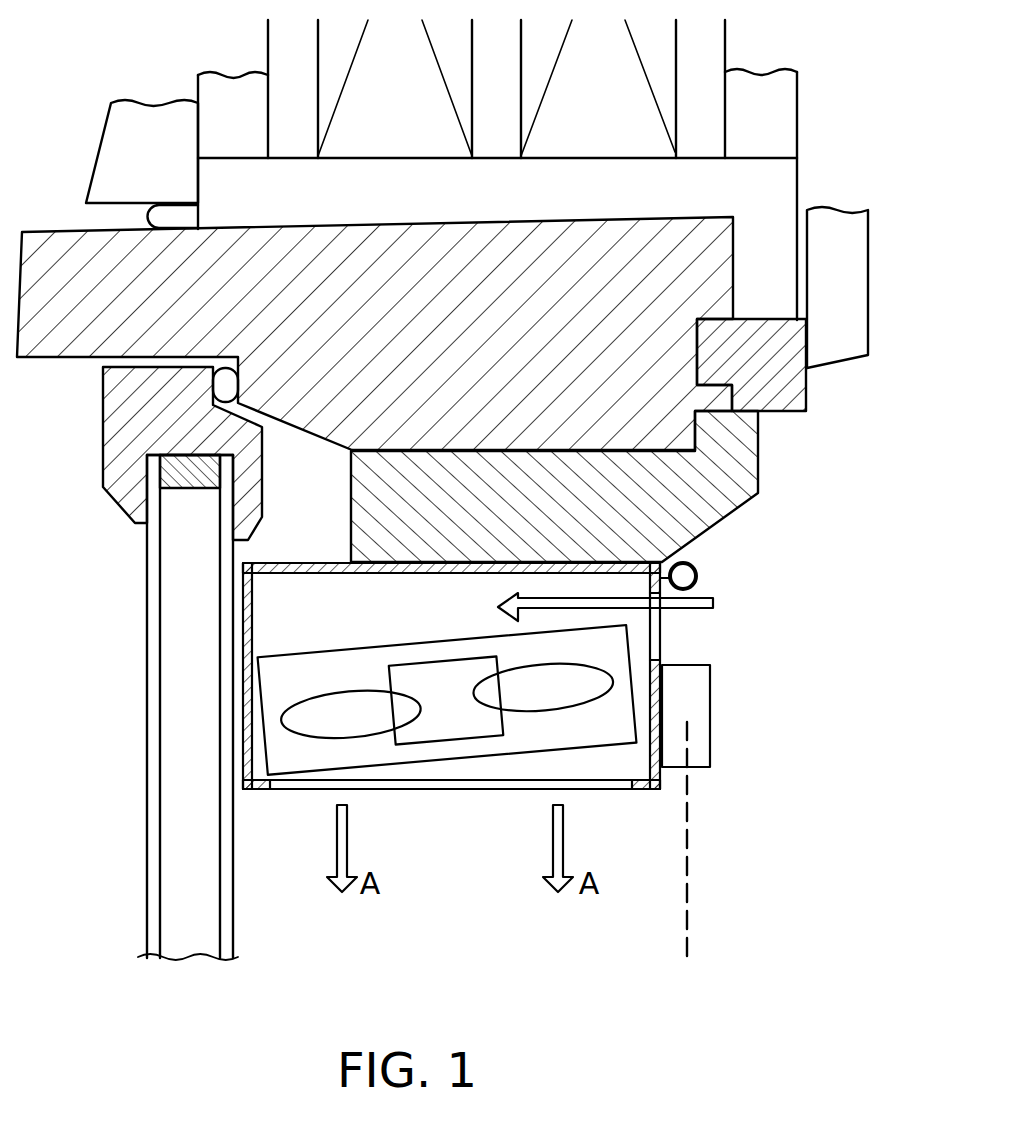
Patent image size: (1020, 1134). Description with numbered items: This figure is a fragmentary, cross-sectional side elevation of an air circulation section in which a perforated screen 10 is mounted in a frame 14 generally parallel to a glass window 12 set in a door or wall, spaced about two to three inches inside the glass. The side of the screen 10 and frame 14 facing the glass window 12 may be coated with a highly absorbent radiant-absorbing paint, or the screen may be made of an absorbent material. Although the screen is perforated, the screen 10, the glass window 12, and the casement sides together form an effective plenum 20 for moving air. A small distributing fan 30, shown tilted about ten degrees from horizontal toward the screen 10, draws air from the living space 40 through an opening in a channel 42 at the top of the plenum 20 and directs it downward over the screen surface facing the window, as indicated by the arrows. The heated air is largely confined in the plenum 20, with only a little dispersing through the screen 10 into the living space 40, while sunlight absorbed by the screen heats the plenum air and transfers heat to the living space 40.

The screen 10 is at (688, 870).
The glass window 12 is at (182, 776).
The frame 14 is at (710, 712).
The plenum 20 is at (387, 950).
The distributing fan 30 is at (445, 720).
The living space 40 is at (912, 636).
The channel 42 is at (272, 603).